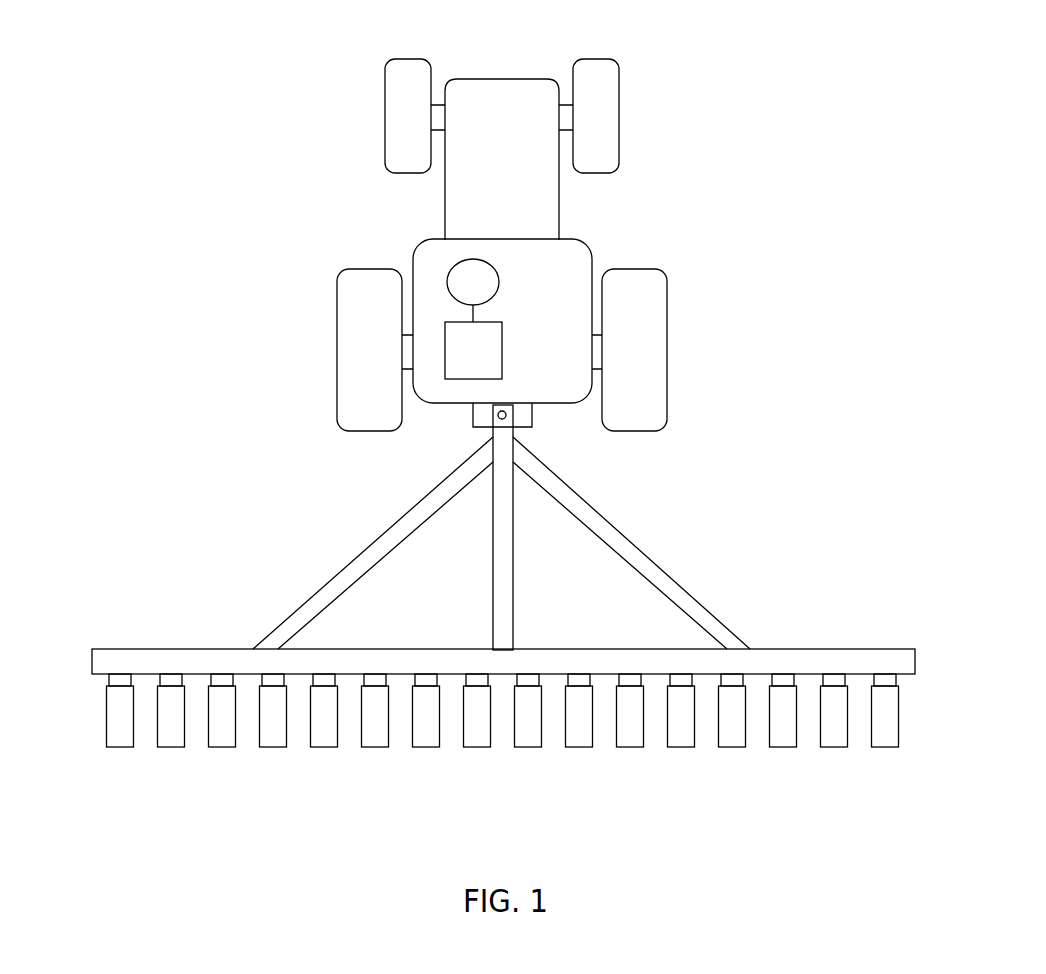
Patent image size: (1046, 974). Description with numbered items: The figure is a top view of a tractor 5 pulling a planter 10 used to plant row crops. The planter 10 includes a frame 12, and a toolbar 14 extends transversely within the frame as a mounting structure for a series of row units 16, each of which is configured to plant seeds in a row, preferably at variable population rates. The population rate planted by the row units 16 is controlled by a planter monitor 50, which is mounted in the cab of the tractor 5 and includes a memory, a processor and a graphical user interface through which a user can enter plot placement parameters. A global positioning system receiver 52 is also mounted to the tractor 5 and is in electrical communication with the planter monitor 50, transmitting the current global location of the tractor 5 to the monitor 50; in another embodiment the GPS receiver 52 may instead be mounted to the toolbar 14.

The tractor 5 is at (575, 245).
The planter 10 is at (503, 630).
The frame 12 is at (488, 545).
The toolbar 14 is at (213, 649).
The row units 16 is at (325, 750).
The planter monitor 50 is at (473, 350).
The GPS receiver 52 is at (473, 290).